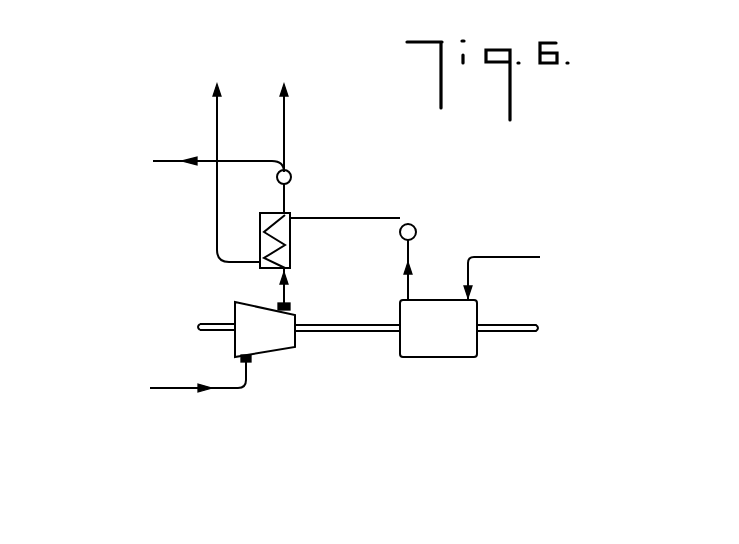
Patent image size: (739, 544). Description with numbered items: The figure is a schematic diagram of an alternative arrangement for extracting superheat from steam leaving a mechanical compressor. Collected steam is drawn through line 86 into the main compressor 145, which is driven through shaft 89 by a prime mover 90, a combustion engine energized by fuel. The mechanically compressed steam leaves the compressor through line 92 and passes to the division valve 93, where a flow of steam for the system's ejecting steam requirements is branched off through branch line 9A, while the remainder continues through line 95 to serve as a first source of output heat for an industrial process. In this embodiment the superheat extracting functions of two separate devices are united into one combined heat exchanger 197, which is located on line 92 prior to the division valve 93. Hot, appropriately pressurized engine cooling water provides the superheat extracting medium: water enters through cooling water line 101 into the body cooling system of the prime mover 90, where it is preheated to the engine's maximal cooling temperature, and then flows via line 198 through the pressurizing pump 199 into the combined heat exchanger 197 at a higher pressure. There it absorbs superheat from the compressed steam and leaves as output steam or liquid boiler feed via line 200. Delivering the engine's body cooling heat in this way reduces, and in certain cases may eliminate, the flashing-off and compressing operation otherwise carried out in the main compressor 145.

The branch line 9A is at (258, 158).
The line 95 is at (288, 140).
The division valve 93 is at (291, 175).
The line 92 is at (288, 195).
The line 200 is at (217, 224).
The heat exchanger 197 is at (291, 247).
The pressurizing pump 199 is at (418, 223).
The line 198 is at (410, 249).
The cooling water line 101 is at (522, 238).
The mechanical compressor 145 is at (245, 302).
The shaft 89 is at (323, 337).
The prime mover 90 is at (480, 357).
The line 86 is at (248, 384).